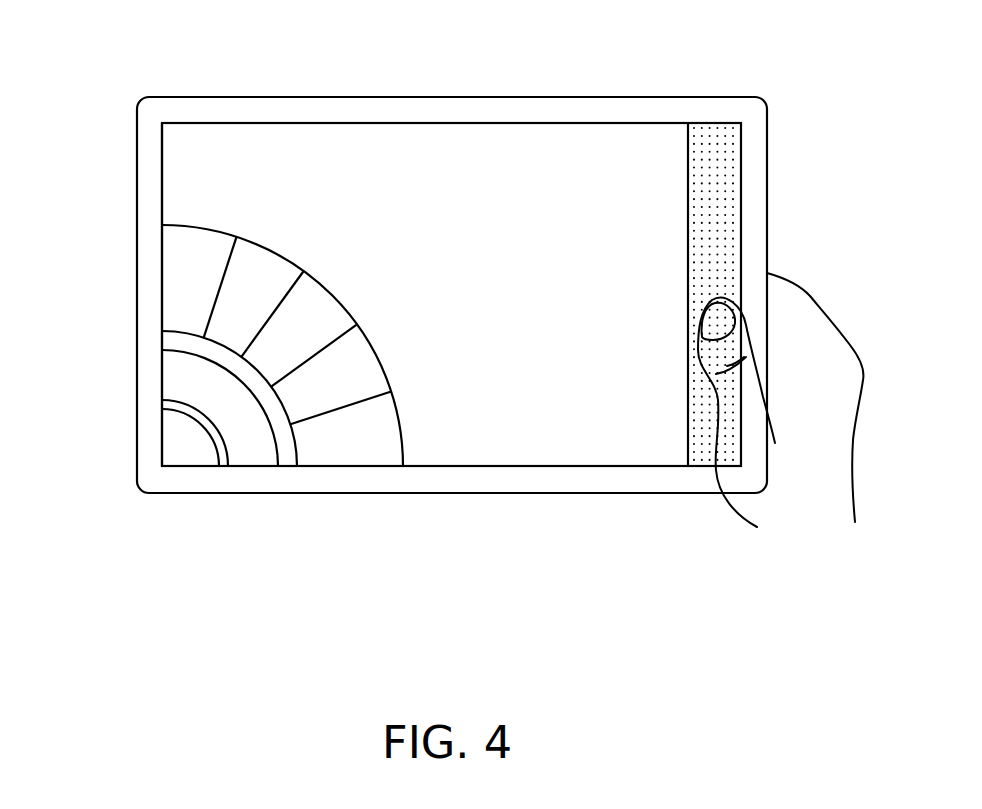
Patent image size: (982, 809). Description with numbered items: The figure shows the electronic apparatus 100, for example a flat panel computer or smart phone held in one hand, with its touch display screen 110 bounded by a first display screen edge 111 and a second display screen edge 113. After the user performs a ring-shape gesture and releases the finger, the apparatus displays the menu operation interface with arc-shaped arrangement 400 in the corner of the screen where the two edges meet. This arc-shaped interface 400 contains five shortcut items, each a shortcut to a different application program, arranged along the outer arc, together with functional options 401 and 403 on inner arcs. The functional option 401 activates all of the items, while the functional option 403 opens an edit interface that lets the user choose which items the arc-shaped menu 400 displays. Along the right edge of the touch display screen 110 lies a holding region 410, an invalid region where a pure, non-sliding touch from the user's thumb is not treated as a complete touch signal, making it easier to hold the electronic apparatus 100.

The electronic apparatus 100 is at (643, 98).
The touch display screen 110 is at (573, 143).
The first display screen edge 111 is at (162, 250).
The second display screen edge 113 is at (455, 467).
The menu operation interface with arc-shaped arrangement 400 is at (233, 325).
The functional option 401 is at (168, 383).
The functional option 403 is at (167, 452).
The holding region 410 is at (710, 235).